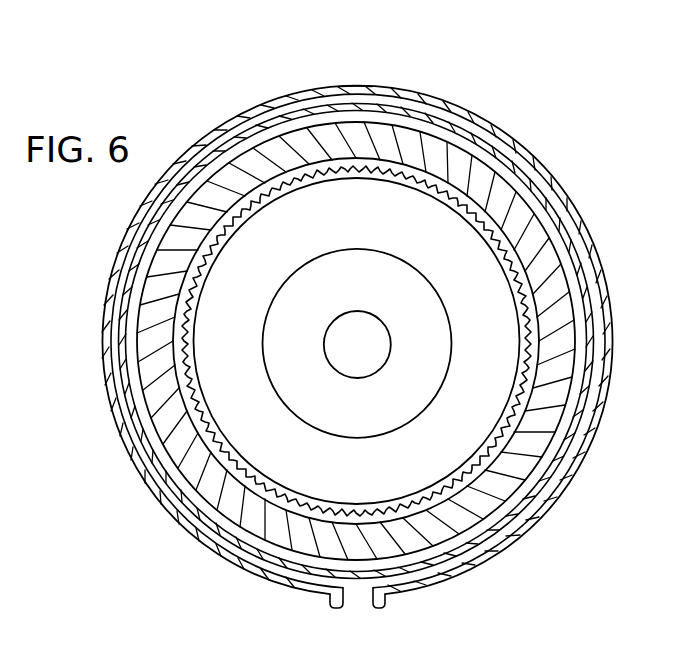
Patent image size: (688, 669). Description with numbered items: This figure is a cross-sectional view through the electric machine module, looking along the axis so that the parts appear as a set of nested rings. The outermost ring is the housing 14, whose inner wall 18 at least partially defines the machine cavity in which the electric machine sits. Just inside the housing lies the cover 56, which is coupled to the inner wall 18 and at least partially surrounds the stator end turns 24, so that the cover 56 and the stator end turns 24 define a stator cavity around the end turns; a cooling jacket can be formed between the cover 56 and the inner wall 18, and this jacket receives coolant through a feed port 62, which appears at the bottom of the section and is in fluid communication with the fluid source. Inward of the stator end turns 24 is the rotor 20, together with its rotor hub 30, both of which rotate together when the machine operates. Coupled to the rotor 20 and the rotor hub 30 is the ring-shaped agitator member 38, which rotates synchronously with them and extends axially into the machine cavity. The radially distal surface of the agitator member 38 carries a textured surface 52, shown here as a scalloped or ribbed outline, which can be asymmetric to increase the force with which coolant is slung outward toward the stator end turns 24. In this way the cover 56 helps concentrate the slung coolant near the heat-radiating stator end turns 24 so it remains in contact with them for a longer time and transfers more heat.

The housing 14 is at (462, 104).
The inner wall 18 is at (352, 92).
The rotor 20 is at (492, 380).
The stator end turns 24 is at (553, 428).
The rotor hub 30 is at (389, 401).
The agitator member 38 is at (517, 275).
The textured surface 52 is at (480, 208).
The cover 56 is at (592, 322).
The feed port 62 is at (372, 603).